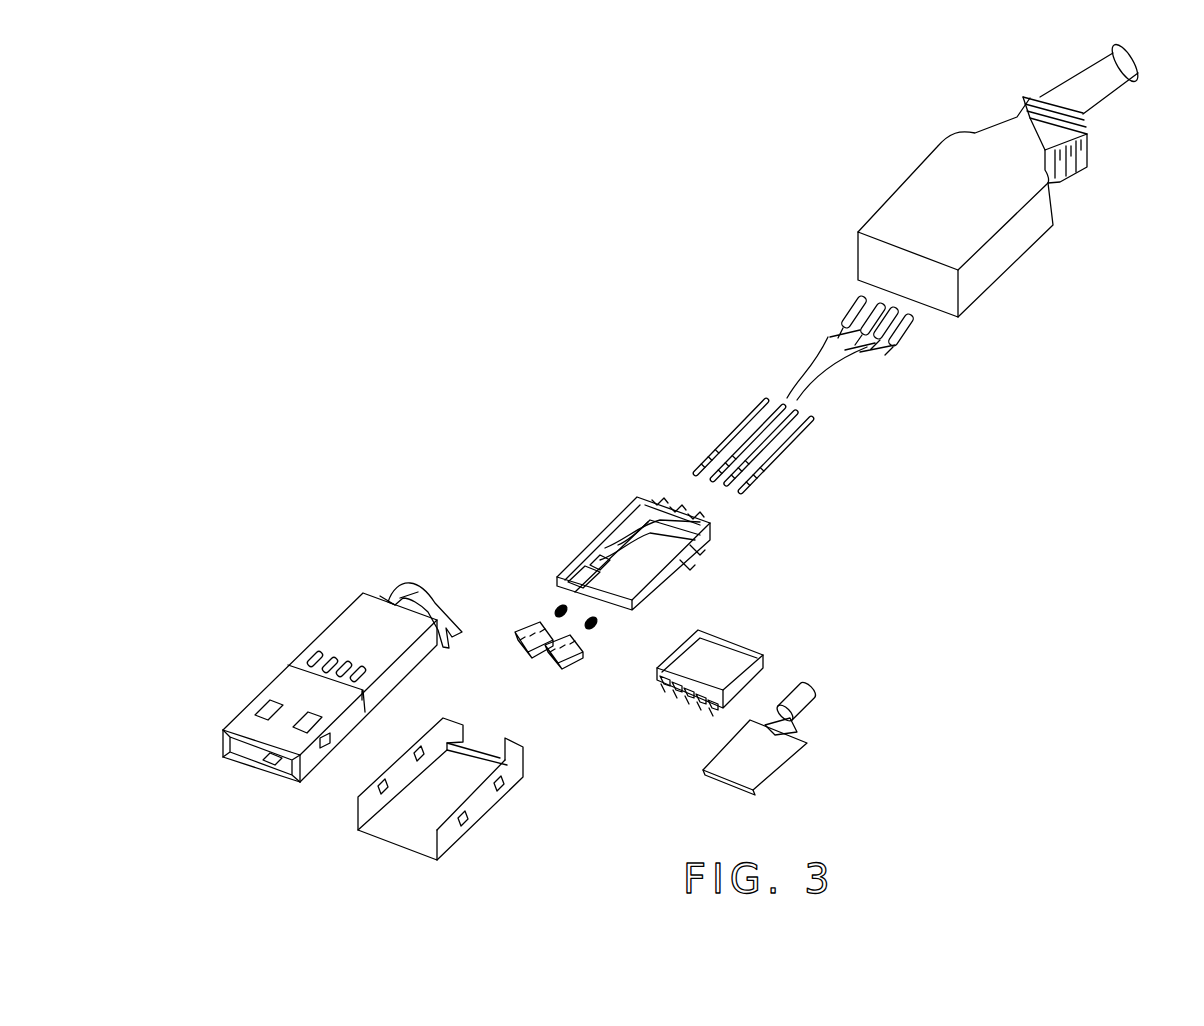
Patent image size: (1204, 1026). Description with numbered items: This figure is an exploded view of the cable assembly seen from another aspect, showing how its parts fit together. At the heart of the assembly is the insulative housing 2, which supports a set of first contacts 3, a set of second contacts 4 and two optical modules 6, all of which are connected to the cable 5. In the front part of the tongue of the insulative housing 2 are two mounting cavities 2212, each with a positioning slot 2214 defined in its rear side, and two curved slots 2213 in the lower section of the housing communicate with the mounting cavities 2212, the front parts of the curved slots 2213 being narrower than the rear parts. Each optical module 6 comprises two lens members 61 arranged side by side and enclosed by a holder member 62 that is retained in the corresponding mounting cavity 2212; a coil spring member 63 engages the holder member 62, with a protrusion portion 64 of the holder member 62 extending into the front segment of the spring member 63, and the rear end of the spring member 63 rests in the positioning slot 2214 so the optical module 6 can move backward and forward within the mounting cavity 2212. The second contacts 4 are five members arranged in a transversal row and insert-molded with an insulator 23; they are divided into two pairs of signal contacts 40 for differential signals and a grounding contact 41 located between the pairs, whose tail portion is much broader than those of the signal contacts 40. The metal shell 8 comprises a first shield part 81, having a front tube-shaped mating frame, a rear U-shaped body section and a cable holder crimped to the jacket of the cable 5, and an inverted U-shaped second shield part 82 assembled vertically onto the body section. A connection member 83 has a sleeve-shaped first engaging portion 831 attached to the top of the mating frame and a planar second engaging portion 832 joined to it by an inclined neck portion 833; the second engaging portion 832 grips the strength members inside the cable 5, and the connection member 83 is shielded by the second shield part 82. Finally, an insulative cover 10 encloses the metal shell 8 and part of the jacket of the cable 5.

The insulative cover 10 is at (1010, 248).
The cable 5 is at (1108, 112).
The first contacts 3 is at (722, 423).
The insulative housing 2 is at (577, 530).
The mounting cavity 2212 is at (578, 577).
The curved slot 2213 is at (630, 537).
The positioning slot 2214 is at (597, 560).
The optical module 6 is at (549, 633).
The lens member 61 is at (535, 648).
The holder member 62 is at (520, 632).
The coil spring member 63 is at (548, 602).
The protrusion portion 64 is at (575, 638).
The second contacts 4 is at (698, 685).
The insulator 23 is at (718, 652).
The signal contacts 40 is at (660, 684).
The grounding contact 41 is at (684, 712).
The connection member 83 is at (804, 717).
The first engaging portion 831 is at (812, 710).
The second engaging portion 832 is at (773, 772).
The inclined neck portion 833 is at (787, 727).
The metal shell 8 is at (335, 721).
The first shield part 81 is at (287, 642).
The second shield part 82 is at (386, 789).